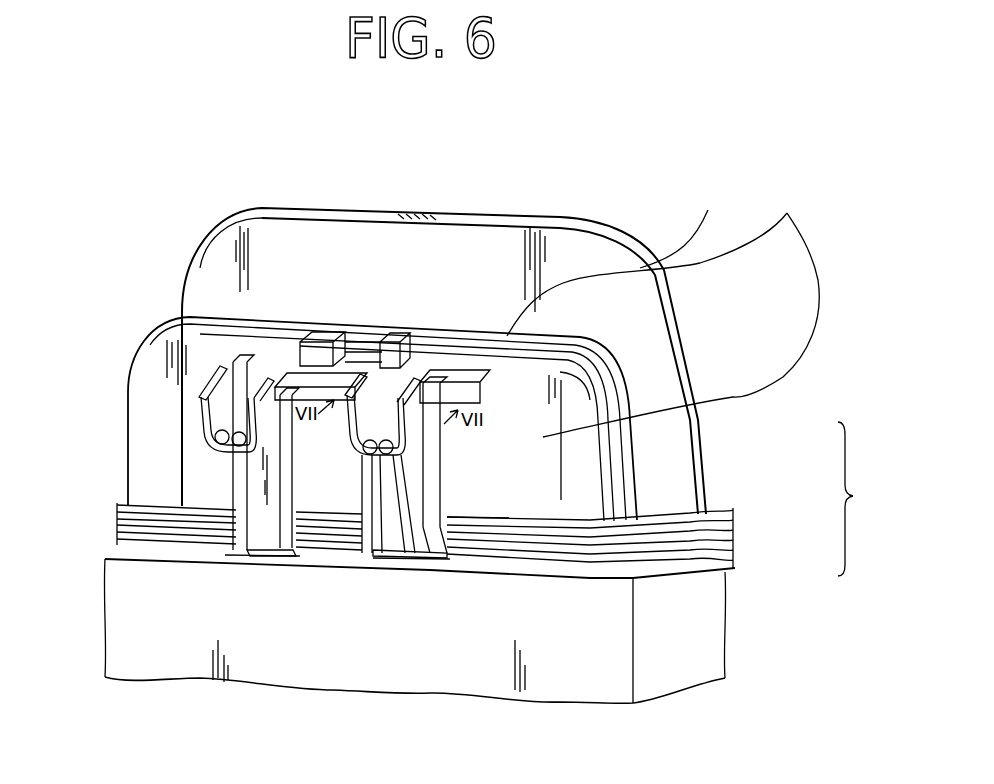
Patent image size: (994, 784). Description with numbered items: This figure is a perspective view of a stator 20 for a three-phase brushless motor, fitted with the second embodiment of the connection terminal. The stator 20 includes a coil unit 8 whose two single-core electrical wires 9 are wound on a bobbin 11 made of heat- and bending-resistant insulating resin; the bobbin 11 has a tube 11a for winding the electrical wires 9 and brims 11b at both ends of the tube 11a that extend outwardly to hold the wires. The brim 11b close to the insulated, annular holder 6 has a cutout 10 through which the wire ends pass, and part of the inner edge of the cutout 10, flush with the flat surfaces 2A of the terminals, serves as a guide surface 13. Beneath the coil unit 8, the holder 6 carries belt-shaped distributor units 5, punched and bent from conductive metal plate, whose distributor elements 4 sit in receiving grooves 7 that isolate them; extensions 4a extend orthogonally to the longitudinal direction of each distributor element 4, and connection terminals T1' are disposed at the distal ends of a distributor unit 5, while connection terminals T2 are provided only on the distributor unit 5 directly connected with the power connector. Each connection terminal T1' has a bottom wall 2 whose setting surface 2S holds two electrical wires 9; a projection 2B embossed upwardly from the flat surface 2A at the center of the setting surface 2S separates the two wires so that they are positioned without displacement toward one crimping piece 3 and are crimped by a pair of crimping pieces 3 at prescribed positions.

The stator 20 is at (785, 74).
The coil unit 8 is at (517, 208).
The bobbin 11 is at (822, 186).
The tube 11a is at (688, 226).
The brim 11b is at (663, 310).
The connection terminal T1' is at (423, 329).
The connection terminal T2 is at (808, 557).
The cutout 10 is at (398, 358).
The electrical wire 9 is at (244, 388).
The guide surface 13 is at (306, 388).
The distributor element 4 is at (480, 567).
The extension 4a is at (263, 488).
The crimping piece 3 is at (205, 410).
The setting surface 2S is at (215, 440).
The flat surface 2A is at (213, 455).
The projection 2B is at (233, 455).
The bottom wall 2 is at (262, 556).
The receiving groove 7 is at (558, 530).
The holder 6 is at (407, 667).
The distributor unit 5 is at (833, 499).